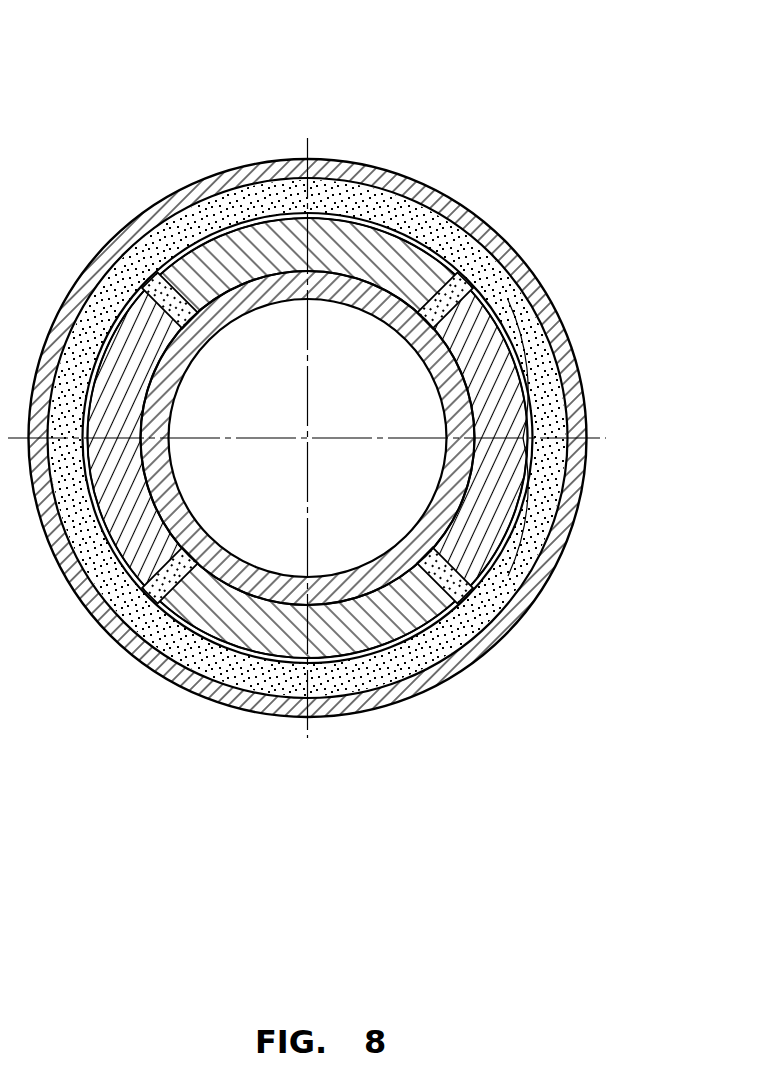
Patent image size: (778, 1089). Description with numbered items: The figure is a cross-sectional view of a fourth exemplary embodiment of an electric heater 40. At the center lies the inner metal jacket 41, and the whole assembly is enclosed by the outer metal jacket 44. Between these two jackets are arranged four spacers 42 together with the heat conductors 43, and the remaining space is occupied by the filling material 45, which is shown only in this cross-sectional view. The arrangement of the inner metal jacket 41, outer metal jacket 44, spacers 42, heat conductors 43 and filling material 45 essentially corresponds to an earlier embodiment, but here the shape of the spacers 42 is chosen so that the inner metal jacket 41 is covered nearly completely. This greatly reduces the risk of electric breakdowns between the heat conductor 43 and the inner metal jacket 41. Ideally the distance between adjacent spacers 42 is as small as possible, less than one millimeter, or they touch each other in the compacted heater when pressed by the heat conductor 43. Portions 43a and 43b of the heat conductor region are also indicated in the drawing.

The electric heater 40 is at (381, 776).
The inner metal jacket 41 is at (342, 290).
The spacers 42 is at (233, 245).
The heat conductors 43 is at (168, 265).
The insert contact portion 43a is at (555, 437).
The spacer block 43b is at (467, 273).
The outer metal jacket 44 is at (217, 703).
The filling material 45 is at (168, 643).